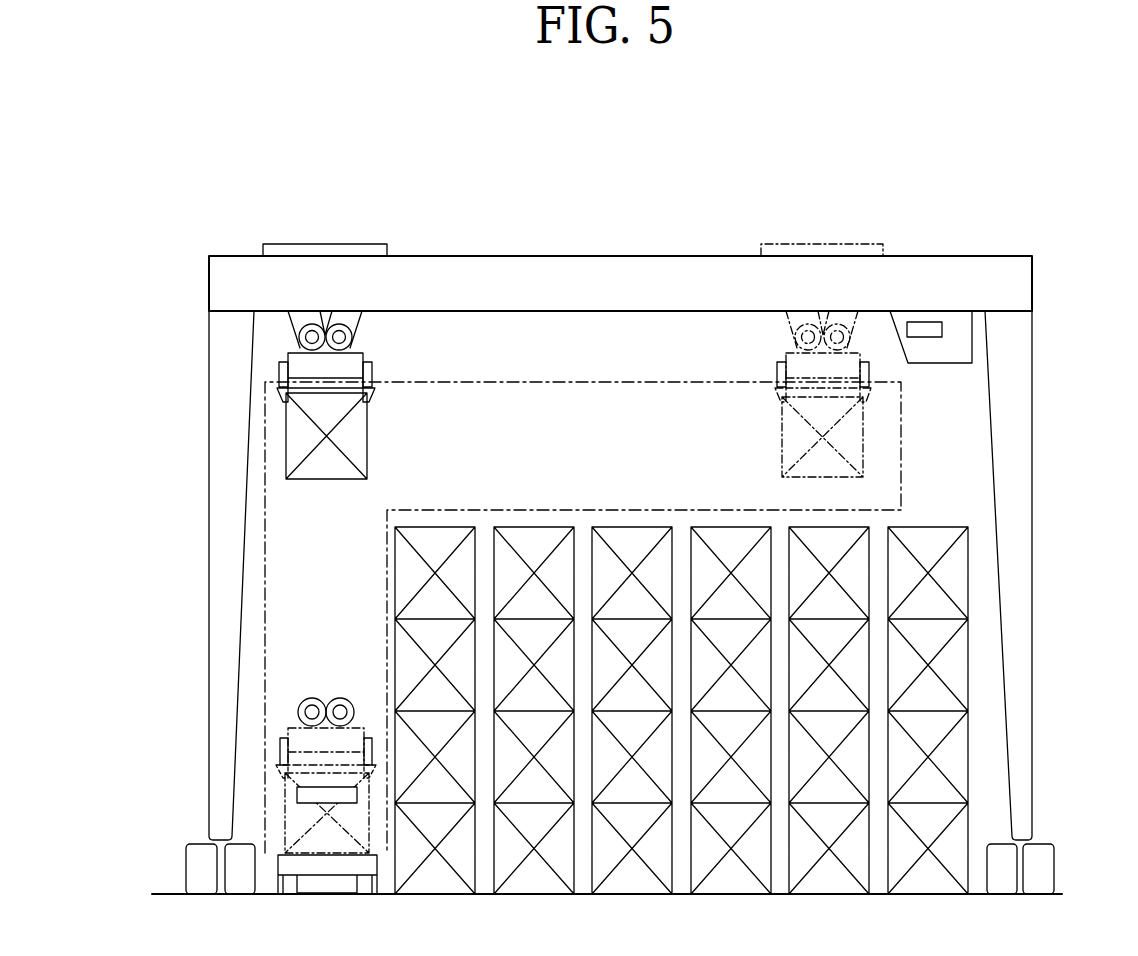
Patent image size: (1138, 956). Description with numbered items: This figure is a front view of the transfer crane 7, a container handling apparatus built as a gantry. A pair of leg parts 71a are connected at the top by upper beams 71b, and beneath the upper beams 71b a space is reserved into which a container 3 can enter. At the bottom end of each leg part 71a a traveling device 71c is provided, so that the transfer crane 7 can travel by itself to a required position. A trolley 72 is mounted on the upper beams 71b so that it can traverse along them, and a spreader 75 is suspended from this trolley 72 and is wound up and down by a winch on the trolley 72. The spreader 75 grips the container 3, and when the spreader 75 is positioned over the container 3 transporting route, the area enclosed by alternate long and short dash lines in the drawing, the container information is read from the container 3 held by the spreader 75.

The transfer crane 7 is at (739, 153).
The leg parts 71a is at (209, 448).
The upper beams 71b is at (962, 256).
The traveling device 71c is at (173, 832).
The trolley 72 is at (371, 244).
The spreader 75 is at (356, 350).
The container 3 is at (370, 420).